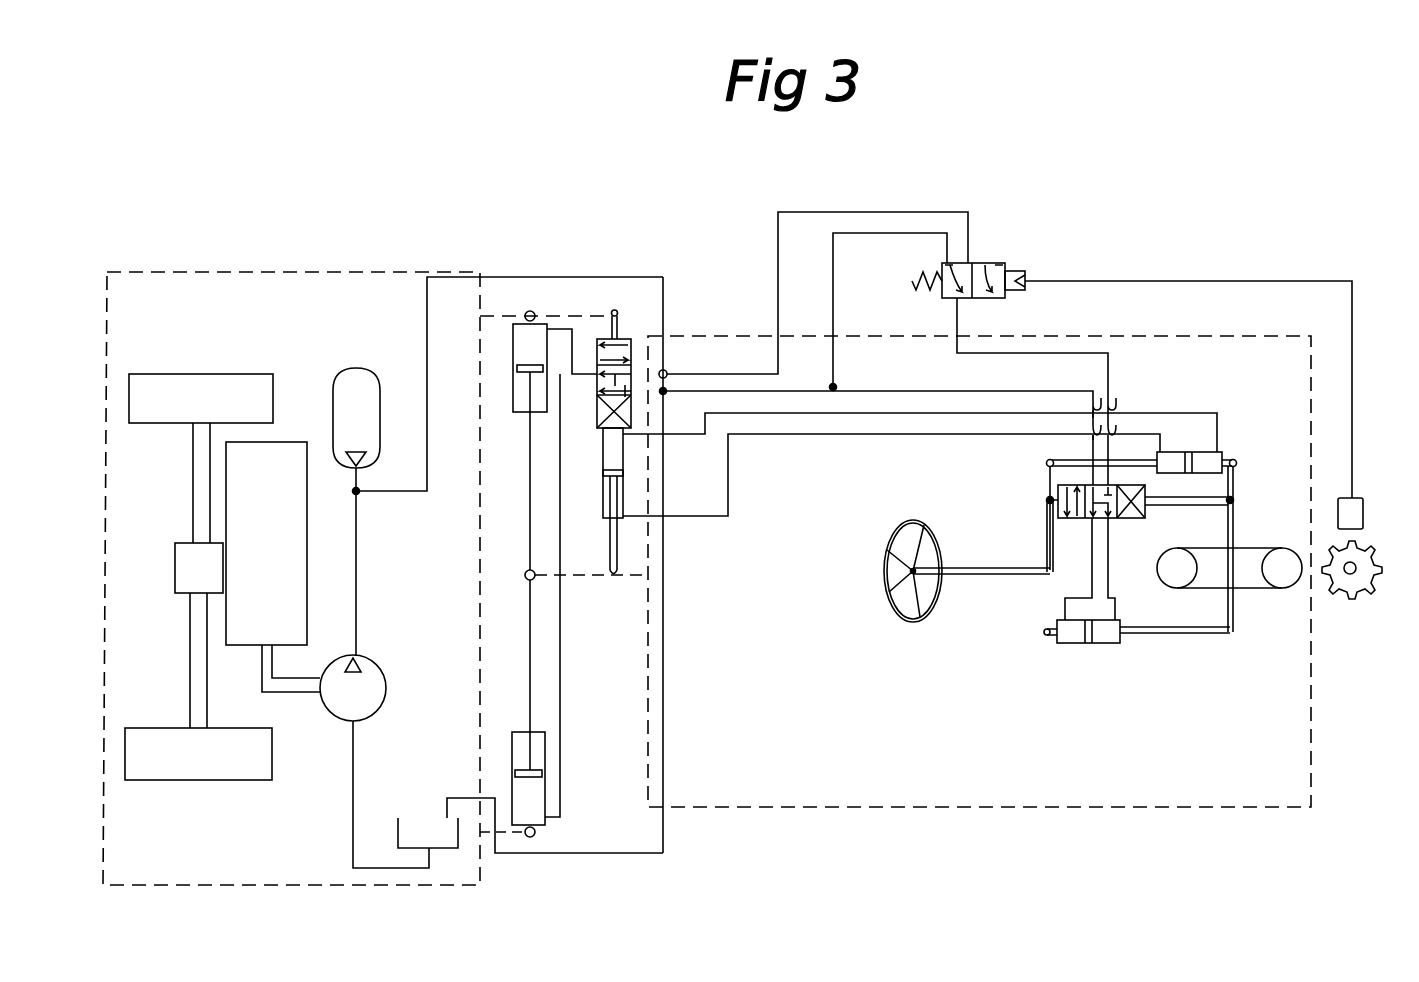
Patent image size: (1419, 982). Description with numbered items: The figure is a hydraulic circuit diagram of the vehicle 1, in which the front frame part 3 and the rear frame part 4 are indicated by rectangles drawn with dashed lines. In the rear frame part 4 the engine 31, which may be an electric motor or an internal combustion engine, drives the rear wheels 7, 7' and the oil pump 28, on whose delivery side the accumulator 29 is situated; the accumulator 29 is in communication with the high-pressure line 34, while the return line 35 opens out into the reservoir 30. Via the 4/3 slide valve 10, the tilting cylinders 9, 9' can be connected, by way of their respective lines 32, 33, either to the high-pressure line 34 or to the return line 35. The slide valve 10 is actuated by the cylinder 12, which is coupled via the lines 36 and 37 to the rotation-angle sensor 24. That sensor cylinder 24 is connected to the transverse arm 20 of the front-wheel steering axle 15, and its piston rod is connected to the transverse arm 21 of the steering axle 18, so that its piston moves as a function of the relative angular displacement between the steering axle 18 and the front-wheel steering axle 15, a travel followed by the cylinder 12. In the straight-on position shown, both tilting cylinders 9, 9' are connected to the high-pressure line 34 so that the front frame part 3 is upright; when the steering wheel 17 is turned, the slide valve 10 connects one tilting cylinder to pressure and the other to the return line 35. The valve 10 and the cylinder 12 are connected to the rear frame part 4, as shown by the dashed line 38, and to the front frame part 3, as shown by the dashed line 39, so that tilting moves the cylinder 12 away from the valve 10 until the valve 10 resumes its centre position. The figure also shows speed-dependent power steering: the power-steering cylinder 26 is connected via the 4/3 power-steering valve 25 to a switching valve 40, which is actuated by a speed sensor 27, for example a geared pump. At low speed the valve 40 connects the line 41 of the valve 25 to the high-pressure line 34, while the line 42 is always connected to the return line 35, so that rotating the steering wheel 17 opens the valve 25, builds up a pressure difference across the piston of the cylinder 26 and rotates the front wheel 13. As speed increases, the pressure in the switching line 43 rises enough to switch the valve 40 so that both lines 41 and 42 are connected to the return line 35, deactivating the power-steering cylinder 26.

The vehicle 1 is at (458, 212).
The front frame part 3 is at (1302, 758).
The rear frame part 4 is at (104, 806).
The rear wheel 7 is at (201, 433).
The rear wheel 7' is at (198, 705).
The tilting cylinder 9 is at (553, 404).
The tilting cylinder 9' is at (517, 740).
The 4/3 slide valve 10 is at (628, 350).
The cylinder 12 is at (624, 488).
The front wheel 13 is at (1300, 576).
The front-wheel steering axle 15 is at (1232, 570).
The steering wheel 17 is at (908, 522).
The steering axle 18 is at (985, 577).
The transverse arm 20 is at (1233, 525).
The transverse arm 21 is at (1045, 512).
The rotation-angle sensor 24 is at (1208, 460).
The 4/3 power-steering valve 25 is at (1050, 492).
The power-steering cylinder 26 is at (1182, 637).
The speed sensor 27 is at (1364, 521).
The oil pump 28 is at (372, 667).
The accumulator 29 is at (352, 378).
The reservoir 30 is at (420, 826).
The engine 31 is at (288, 448).
The line 32 is at (560, 517).
The line 33 is at (575, 347).
The high-pressure line 34 is at (604, 277).
The return line 35 is at (596, 855).
The line 36 is at (853, 413).
The line 37 is at (795, 434).
The dashed line 38 is at (563, 316).
The dashed line 39 is at (628, 605).
The switching valve 40 is at (980, 263).
The line 41 is at (1110, 375).
The line 42 is at (912, 387).
The switching line 43 is at (1354, 327).